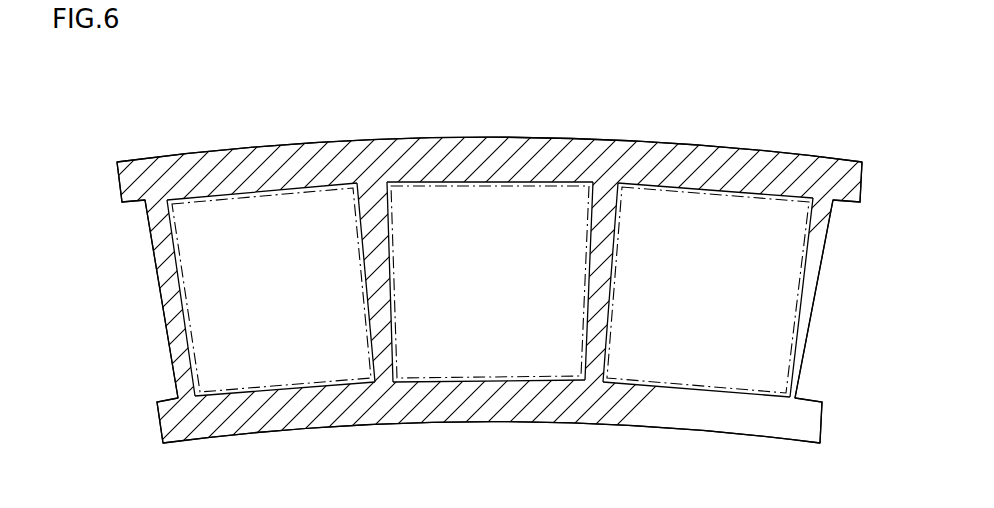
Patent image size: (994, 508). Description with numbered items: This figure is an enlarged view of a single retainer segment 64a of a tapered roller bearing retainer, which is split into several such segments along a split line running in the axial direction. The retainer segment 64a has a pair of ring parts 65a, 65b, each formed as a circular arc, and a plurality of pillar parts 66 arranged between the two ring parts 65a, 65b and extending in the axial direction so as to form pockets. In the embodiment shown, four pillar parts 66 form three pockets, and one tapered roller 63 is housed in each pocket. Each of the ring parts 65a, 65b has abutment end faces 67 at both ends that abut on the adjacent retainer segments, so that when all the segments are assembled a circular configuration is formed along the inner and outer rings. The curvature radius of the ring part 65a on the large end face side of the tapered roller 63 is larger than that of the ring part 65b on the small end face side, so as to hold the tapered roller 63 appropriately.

The retainer segment 64a is at (188, 128).
The tapered roller 63 is at (263, 233).
The ring part 65a is at (482, 165).
The ring part 65b is at (489, 400).
The pillar part 66 is at (179, 362).
The abutment end face 67 is at (118, 181).